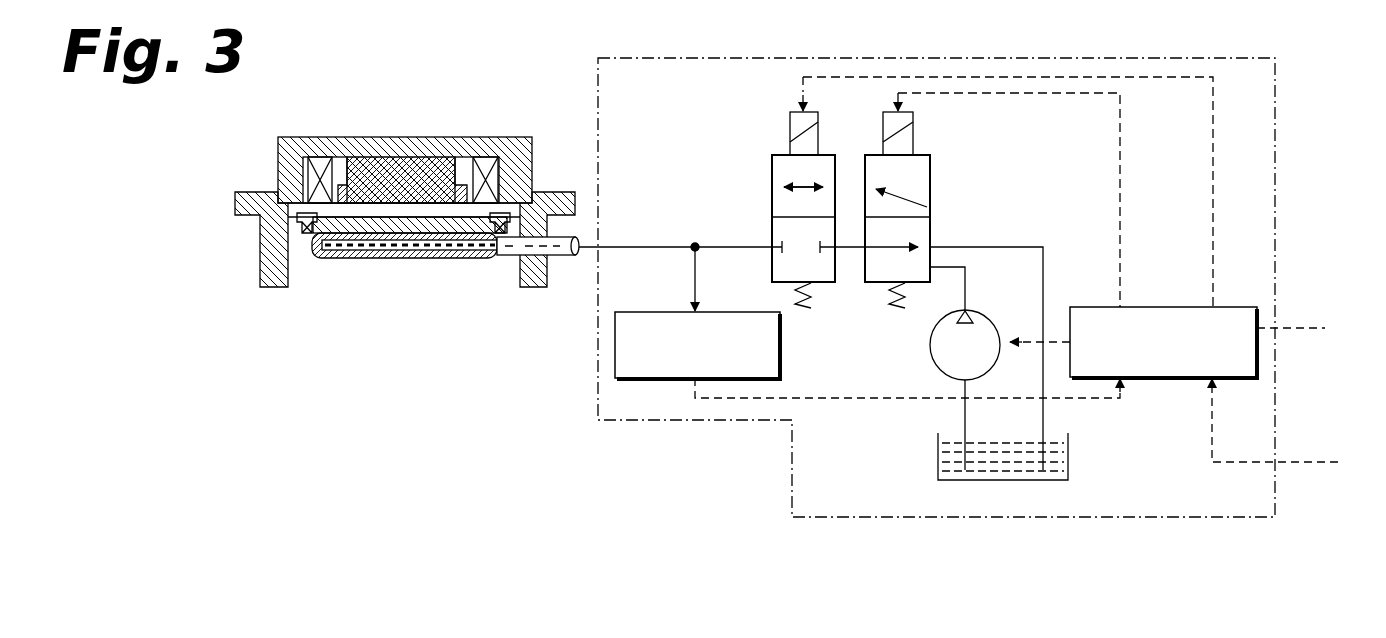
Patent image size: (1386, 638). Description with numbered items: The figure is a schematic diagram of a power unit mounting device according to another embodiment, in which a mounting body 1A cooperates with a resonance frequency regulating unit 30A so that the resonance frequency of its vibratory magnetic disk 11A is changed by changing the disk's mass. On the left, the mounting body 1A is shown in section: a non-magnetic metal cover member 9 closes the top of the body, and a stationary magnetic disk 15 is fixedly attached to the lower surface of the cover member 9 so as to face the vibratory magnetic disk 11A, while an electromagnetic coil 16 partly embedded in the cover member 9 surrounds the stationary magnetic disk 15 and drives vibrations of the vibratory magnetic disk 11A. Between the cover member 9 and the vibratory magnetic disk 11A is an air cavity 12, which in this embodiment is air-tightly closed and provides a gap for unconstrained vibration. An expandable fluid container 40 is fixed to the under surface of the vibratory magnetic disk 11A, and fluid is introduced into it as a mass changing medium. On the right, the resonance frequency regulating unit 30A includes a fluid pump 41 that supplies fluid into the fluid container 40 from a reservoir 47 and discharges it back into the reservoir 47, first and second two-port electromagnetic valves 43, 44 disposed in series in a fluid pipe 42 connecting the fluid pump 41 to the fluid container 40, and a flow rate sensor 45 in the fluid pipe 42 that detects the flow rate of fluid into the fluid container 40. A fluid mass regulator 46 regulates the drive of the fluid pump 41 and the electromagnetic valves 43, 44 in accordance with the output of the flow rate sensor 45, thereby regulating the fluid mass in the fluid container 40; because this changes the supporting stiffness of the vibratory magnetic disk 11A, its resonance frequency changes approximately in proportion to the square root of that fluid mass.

The mounting body 1A is at (403, 186).
The cover member 9 is at (343, 140).
The stationary magnetic disk 15 is at (443, 185).
The electromagnetic coil 16 is at (486, 156).
The air cavity 12 is at (300, 206).
The vibratory magnetic disk 11A is at (433, 234).
The expandable fluid container 40 is at (372, 259).
The fluid pipe 42 is at (648, 245).
The first two-port electromagnetic valve 43 is at (771, 163).
The second two-port electromagnetic valve 44 is at (931, 164).
The flow rate sensor 45 is at (781, 349).
The fluid pump 41 is at (929, 343).
The fluid mass regulator 46 is at (1155, 306).
The reservoir 47 is at (1069, 455).
The resonance frequency regulating unit 30A is at (1276, 100).